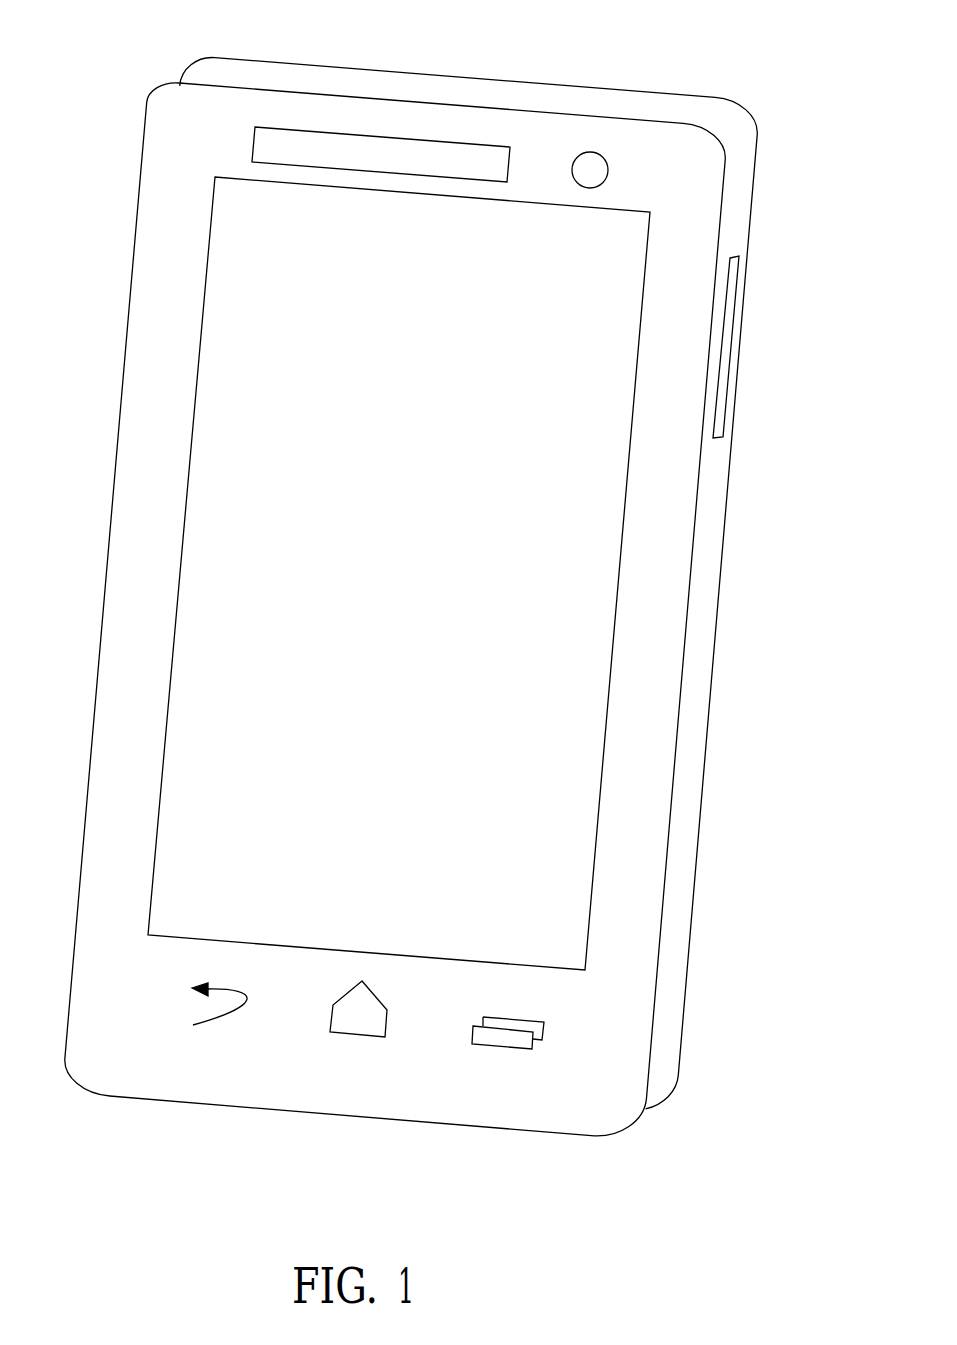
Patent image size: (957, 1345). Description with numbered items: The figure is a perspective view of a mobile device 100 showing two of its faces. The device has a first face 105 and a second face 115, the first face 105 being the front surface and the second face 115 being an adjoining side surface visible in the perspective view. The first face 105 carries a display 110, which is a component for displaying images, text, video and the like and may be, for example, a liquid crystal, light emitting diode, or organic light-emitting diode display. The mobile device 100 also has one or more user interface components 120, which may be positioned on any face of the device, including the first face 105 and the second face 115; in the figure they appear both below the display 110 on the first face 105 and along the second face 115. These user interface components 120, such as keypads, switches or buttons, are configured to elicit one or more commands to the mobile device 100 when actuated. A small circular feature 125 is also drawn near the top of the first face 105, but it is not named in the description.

The mobile device 100 is at (637, 67).
The first face 105 is at (653, 605).
The display 110 is at (592, 287).
The second face 115 is at (715, 522).
The user interface components 120 is at (732, 348).
The camera 125 is at (588, 168).